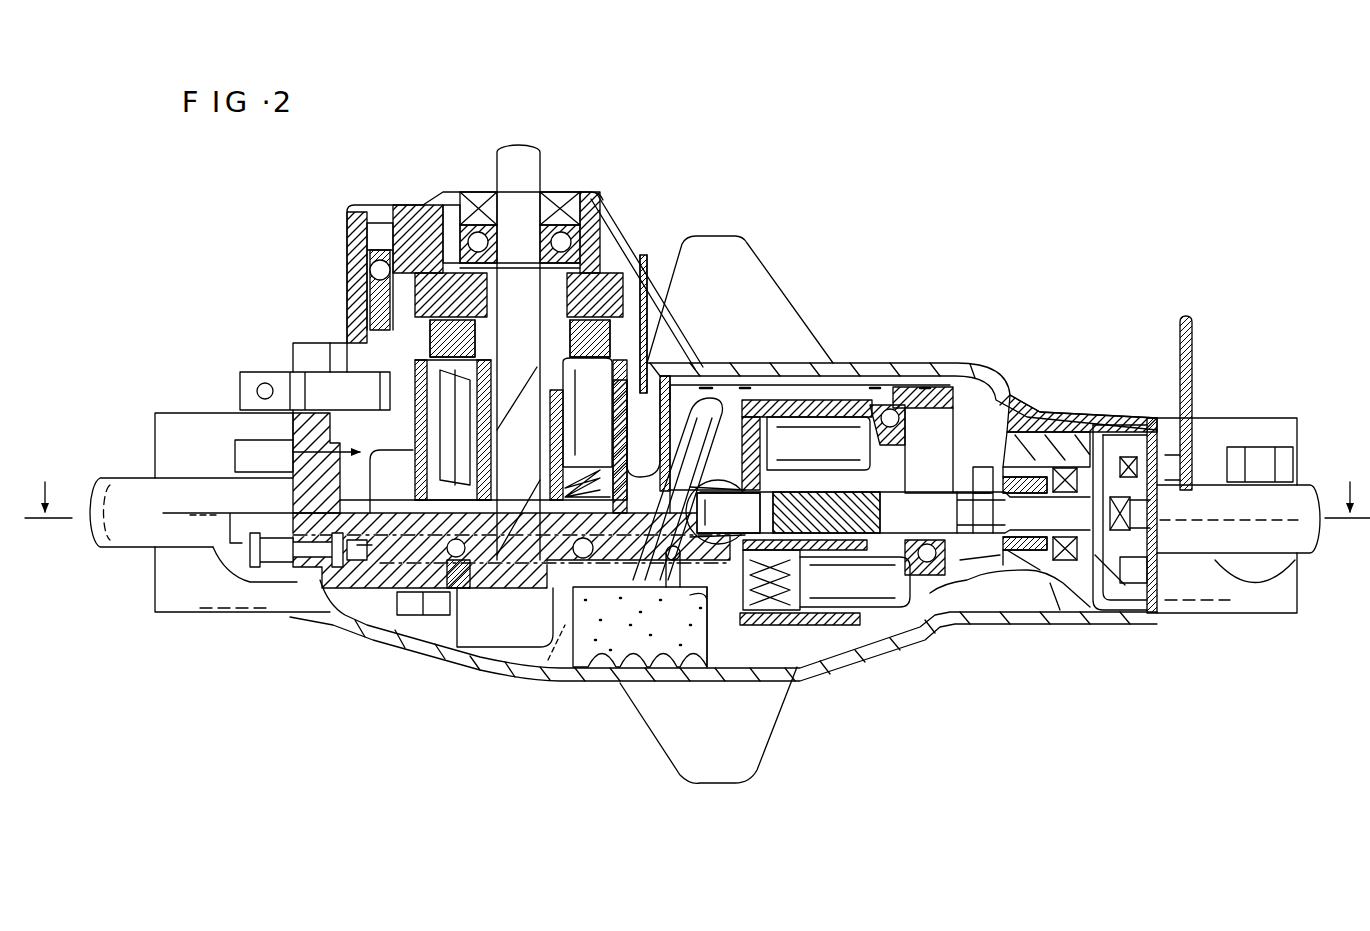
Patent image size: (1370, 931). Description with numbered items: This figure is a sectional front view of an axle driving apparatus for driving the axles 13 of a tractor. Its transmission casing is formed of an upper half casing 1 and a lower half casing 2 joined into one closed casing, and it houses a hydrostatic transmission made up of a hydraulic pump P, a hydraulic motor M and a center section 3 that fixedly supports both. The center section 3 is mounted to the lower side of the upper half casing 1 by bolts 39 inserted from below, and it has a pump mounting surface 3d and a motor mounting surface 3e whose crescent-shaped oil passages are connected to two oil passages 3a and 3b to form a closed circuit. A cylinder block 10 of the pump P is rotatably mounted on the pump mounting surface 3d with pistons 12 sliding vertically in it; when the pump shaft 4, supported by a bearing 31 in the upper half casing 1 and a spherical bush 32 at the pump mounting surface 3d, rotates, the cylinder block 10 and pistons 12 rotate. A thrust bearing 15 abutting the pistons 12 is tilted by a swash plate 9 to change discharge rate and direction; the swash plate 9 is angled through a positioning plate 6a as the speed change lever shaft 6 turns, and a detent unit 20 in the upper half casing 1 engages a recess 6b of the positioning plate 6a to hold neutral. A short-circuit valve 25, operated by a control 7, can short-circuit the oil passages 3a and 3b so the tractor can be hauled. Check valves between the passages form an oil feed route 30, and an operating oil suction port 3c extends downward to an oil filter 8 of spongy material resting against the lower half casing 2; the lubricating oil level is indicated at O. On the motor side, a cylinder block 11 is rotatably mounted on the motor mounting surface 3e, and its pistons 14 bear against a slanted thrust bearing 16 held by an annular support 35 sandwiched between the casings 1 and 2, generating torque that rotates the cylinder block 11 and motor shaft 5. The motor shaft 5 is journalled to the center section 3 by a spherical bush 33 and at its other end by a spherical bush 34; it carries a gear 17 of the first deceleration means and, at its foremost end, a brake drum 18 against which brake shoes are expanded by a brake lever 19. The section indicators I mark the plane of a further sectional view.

The upper half casing 1 is at (745, 365).
The lower half casing 2 is at (500, 645).
The center section 3 is at (507, 578).
The oil passage 3a is at (535, 695).
The oil passage 3b is at (390, 588).
The operating oil suction port 3c is at (672, 562).
The pump mounting surface 3d is at (395, 505).
The motor mounting surface 3e is at (882, 661).
The pump shaft 4 is at (518, 150).
The motor shaft 5 is at (905, 510).
The speed change lever shaft 6 is at (265, 372).
The positioning plate 6a is at (345, 336).
The recess 6b is at (365, 292).
The control 7 is at (290, 568).
The oil filter 8 is at (608, 634).
The swash plate 9 is at (648, 290).
The cylinder block 10 is at (413, 438).
The cylinder block 11 is at (880, 648).
The pistons 12 is at (575, 400).
The axles 13 is at (142, 550).
The pistons 14 is at (810, 461).
The thrust bearing 15 is at (572, 333).
The thrust bearing 16 is at (898, 428).
The gear 17 is at (983, 467).
The brake drum 18 is at (1128, 613).
The brake lever 19 is at (1192, 372).
The detent unit 20 is at (372, 286).
The short-circuit valve 25 is at (348, 563).
The oil feed route 30 is at (700, 605).
The bearing 31 is at (570, 238).
The spherical bush 32 is at (477, 560).
The spherical bush 33 is at (700, 470).
The spherical bush 34 is at (1020, 570).
The annular support 35 is at (940, 387).
The bolts 39 is at (410, 617).
The hydraulic motor M is at (805, 398).
The oil level O is at (725, 378).
The hydraulic pump P is at (312, 454).
The section line I is at (697, 483).